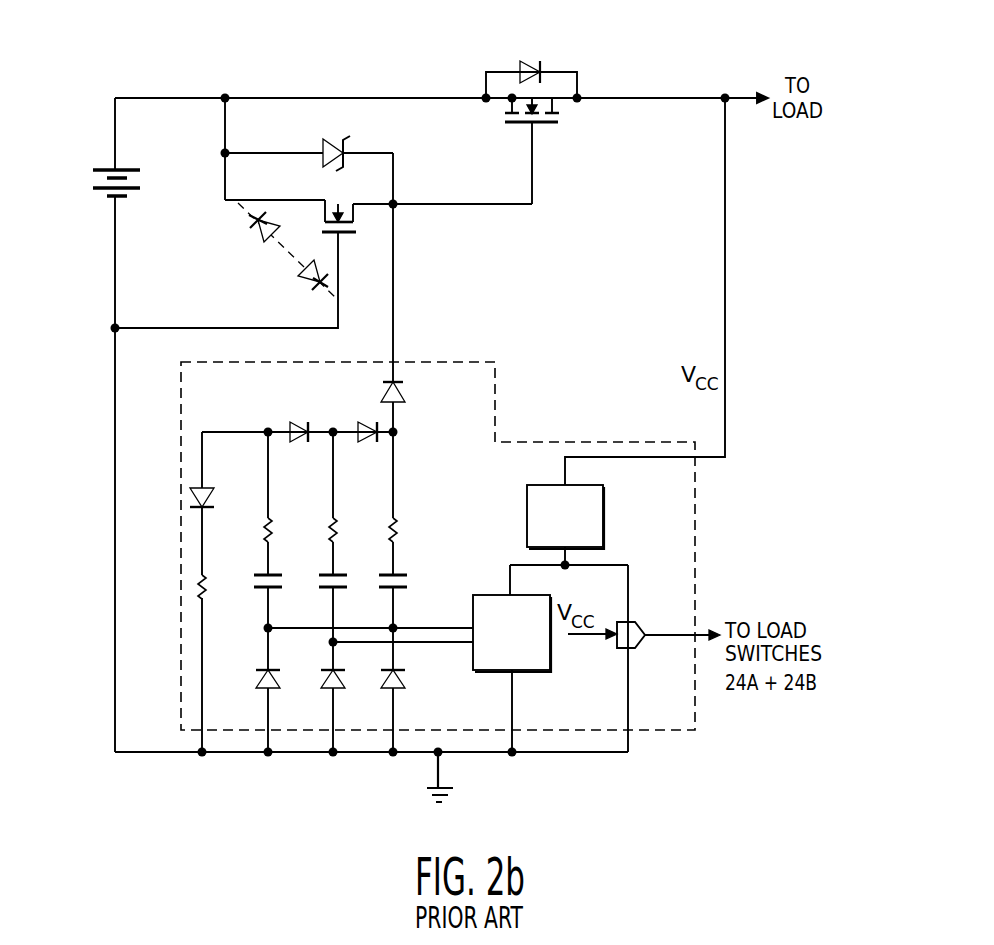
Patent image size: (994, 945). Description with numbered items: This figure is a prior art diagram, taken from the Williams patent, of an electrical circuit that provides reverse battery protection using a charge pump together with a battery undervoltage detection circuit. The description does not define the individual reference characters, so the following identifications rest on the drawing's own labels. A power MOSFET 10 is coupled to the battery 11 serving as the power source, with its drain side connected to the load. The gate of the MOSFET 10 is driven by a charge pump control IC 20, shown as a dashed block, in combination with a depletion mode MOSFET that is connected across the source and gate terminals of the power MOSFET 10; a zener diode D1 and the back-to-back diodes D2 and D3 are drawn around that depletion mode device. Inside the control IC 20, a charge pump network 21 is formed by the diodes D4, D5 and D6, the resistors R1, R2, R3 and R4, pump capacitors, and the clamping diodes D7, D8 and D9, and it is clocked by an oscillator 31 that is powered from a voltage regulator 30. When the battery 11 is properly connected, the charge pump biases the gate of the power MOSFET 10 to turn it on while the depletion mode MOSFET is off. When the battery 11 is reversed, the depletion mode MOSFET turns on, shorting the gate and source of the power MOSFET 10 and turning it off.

The main power MOSFET switch 10 is at (566, 38).
The battery 11 is at (107, 188).
The control circuit 20 is at (566, 441).
The charge pump gate drive network 21 is at (342, 567).
The voltage regulator 30 is at (605, 500).
The oscillator 31 is at (482, 596).
The zener diode D1 is at (322, 147).
The diode D2 is at (257, 233).
The diode D3 is at (306, 278).
The diode D4 is at (302, 453).
The diode D5 is at (370, 453).
The diode D6 is at (408, 400).
The diode D7 is at (282, 699).
The diode D8 is at (347, 699).
The diode D9 is at (407, 699).
The resistor R1 is at (218, 592).
The resistor R2 is at (283, 535).
The resistor R3 is at (348, 535).
The resistor R4 is at (408, 535).